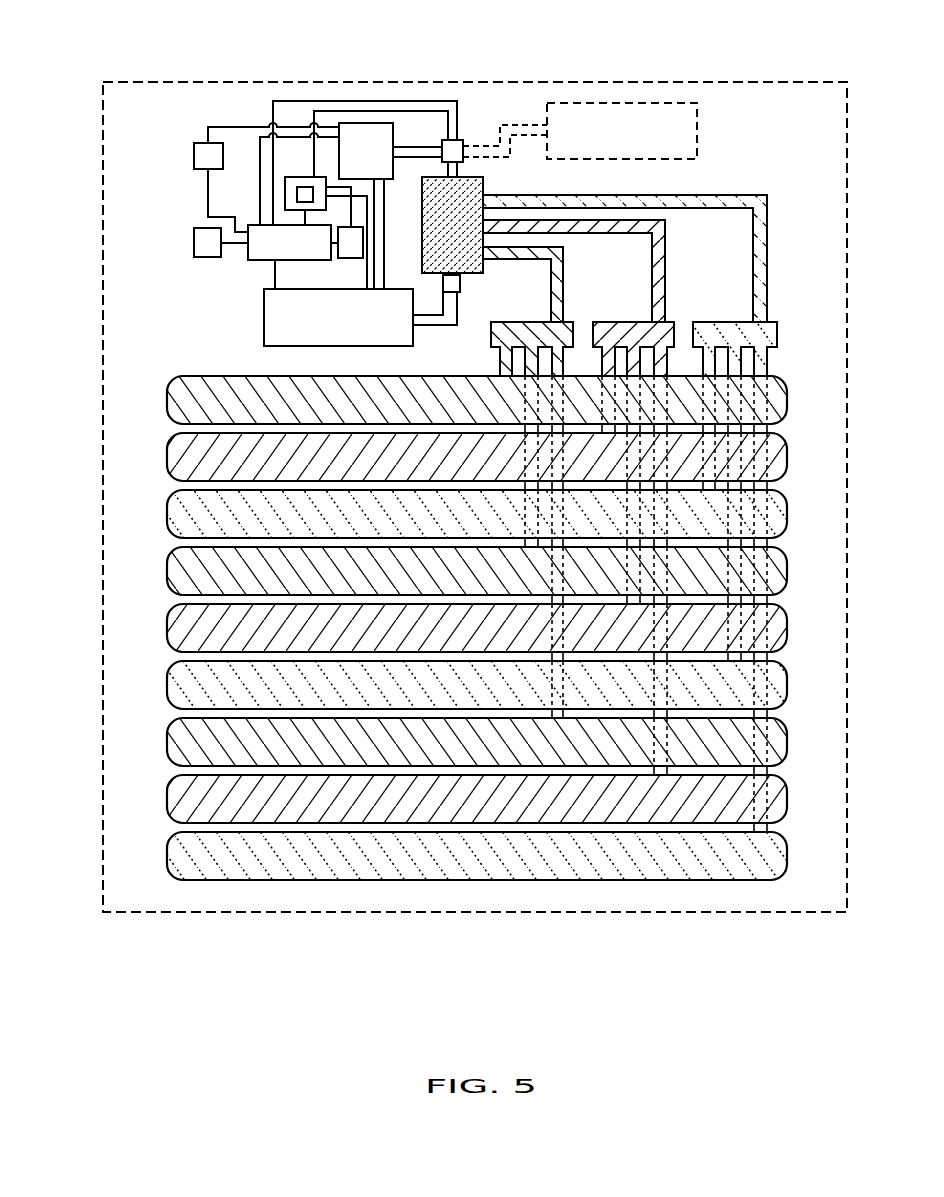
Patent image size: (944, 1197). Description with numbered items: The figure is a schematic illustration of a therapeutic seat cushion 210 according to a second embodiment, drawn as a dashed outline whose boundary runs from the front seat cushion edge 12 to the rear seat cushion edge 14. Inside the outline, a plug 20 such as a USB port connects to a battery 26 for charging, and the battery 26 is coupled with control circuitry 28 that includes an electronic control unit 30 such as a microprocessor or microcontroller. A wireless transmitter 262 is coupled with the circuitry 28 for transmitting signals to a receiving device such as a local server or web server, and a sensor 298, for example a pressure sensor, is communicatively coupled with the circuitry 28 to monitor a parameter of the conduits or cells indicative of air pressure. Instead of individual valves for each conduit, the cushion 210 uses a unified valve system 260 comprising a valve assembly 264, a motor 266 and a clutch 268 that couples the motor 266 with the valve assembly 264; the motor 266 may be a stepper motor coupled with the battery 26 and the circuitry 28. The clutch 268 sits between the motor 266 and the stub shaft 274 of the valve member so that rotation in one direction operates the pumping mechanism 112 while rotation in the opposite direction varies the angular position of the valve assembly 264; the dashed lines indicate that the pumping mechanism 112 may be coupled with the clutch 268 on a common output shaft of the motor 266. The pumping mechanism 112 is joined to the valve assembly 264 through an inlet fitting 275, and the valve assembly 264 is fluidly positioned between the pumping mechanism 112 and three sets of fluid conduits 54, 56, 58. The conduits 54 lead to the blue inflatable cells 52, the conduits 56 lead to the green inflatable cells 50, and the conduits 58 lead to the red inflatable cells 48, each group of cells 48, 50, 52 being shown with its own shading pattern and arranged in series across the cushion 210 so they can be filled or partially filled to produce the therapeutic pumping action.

The cushion 210 is at (159, 43).
The rear seat cushion edge 14 is at (501, 78).
The front seat cushion edge 12 is at (327, 916).
The valve system 260 is at (406, 96).
The sensor 298 is at (194, 156).
The plug 20 is at (194, 242).
The battery 26 is at (248, 262).
The wireless transmitter 262 is at (350, 259).
The control circuitry 28 is at (285, 192).
The electronic control unit 30 is at (305, 188).
The motor 266 is at (375, 123).
The clutch 268 is at (459, 140).
The stub shaft 274 is at (460, 170).
The valve assembly 264 is at (422, 238).
The inlet fitting 275 is at (462, 284).
The pumping mechanism 112 is at (264, 318).
The inflatable cells 52 is at (167, 383).
The inflatable cells 50 is at (167, 440).
The inflatable cells 48 is at (167, 497).
The fluid conduits 54 is at (492, 369).
The fluid conduits 56 is at (596, 369).
The fluid conduits 58 is at (697, 369).